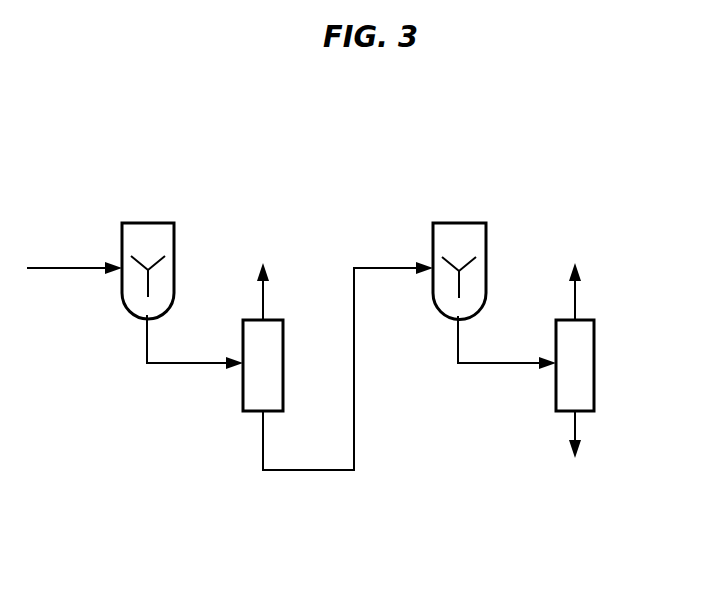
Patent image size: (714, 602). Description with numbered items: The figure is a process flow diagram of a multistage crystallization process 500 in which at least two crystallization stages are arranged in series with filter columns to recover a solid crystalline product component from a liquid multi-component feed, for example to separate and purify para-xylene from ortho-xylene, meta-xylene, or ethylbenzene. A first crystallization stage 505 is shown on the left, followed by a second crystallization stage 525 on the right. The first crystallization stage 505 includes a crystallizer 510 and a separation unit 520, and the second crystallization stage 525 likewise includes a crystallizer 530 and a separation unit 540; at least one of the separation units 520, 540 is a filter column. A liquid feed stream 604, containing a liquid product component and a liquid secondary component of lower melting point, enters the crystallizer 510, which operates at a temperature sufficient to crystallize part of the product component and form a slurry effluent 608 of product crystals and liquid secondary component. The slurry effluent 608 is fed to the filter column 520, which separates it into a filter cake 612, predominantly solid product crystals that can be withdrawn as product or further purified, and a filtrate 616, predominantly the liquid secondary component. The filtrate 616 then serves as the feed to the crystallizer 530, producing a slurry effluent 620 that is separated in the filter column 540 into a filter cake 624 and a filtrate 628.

The multistage crystallization process 500 is at (540, 132).
The first crystallization stage 505 is at (315, 493).
The second crystallization stage 525 is at (642, 493).
The crystallizer 510 is at (160, 223).
The crystallizer 530 is at (472, 223).
The separation unit 520 is at (243, 403).
The separation unit 540 is at (556, 403).
The liquid feed stream 604 is at (62, 267).
The slurry effluent 608 is at (186, 360).
The filter cake 612 is at (265, 296).
The filtrate 616 is at (355, 396).
The slurry effluent 620 is at (498, 360).
The filter cake 624 is at (577, 296).
The filtrate 628 is at (577, 428).